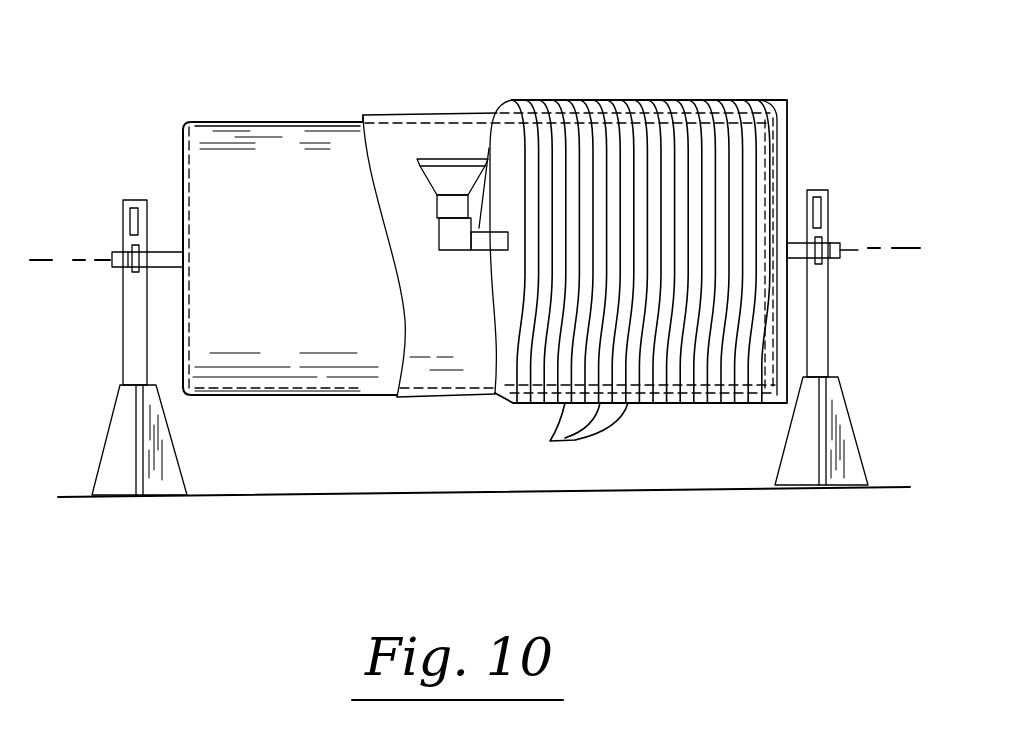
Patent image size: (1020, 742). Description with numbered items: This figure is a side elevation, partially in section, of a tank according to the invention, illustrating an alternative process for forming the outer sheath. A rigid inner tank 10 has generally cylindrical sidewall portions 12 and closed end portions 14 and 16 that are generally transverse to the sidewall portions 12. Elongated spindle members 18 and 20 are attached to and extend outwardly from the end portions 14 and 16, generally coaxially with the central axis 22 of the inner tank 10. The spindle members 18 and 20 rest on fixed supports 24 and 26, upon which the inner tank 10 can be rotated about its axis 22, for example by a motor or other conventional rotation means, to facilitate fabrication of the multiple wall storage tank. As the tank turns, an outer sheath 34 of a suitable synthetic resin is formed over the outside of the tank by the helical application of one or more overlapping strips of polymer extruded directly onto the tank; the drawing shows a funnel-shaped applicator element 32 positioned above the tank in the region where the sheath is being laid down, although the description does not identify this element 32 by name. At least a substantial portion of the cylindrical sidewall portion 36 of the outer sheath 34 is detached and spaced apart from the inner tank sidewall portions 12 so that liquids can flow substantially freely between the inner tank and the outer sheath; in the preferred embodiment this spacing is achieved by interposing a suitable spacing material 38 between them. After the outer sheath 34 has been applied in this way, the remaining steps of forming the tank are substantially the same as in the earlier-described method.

The inner tank 10 is at (160, 70).
The sidewall portions 12 is at (353, 372).
The end portion 14 is at (186, 152).
The end portion 16 is at (778, 158).
The spindle member 18 is at (120, 252).
The spindle member 20 is at (838, 243).
The central axis 22 is at (872, 250).
The fixed support 24 is at (135, 329).
The fixed support 26 is at (827, 332).
The funnel feed 32 is at (456, 182).
The outer sheath 34 is at (653, 100).
The cylindrical sidewall portion of the outer sheath 36 is at (568, 433).
The spacing material 38 is at (378, 112).